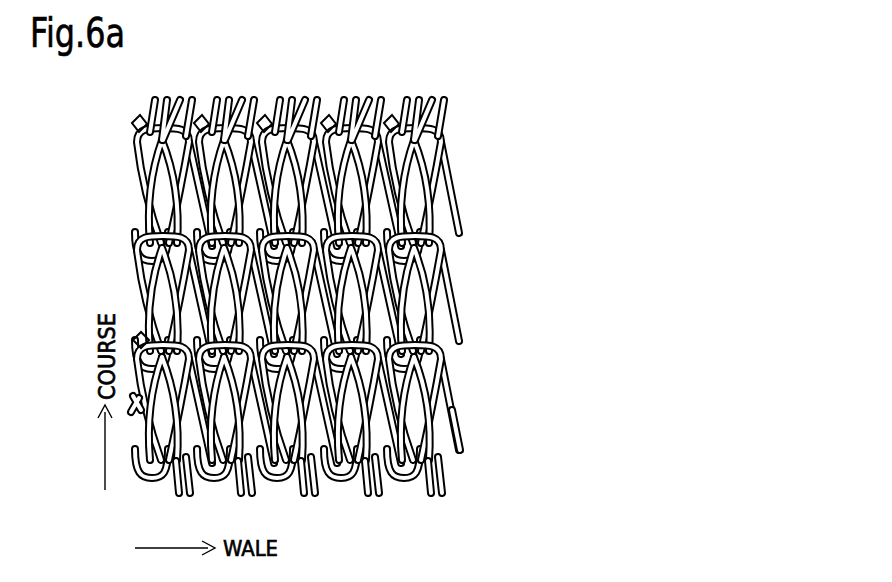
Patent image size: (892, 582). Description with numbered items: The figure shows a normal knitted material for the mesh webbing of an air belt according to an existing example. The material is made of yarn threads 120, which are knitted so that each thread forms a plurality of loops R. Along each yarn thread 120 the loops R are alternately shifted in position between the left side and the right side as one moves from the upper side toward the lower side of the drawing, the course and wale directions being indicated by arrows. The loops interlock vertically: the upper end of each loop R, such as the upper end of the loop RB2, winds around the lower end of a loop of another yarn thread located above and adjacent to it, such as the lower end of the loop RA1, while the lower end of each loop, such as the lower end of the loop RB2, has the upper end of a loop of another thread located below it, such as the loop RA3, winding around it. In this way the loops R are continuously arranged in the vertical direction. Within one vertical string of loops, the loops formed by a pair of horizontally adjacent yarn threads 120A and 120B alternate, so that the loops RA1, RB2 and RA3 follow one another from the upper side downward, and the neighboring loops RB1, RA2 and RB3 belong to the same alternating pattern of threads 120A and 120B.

The yarn thread 120 is at (346, 98).
The yarn thread 120A is at (406, 102).
The yarn thread 120B is at (349, 98).
The loop R is at (430, 419).
The loop RA1 is at (361, 184).
The loop RA2 is at (429, 268).
The loop RA3 is at (367, 405).
The loop RB1 is at (296, 156).
The loop RB2 is at (366, 305).
The loop RB3 is at (299, 426).